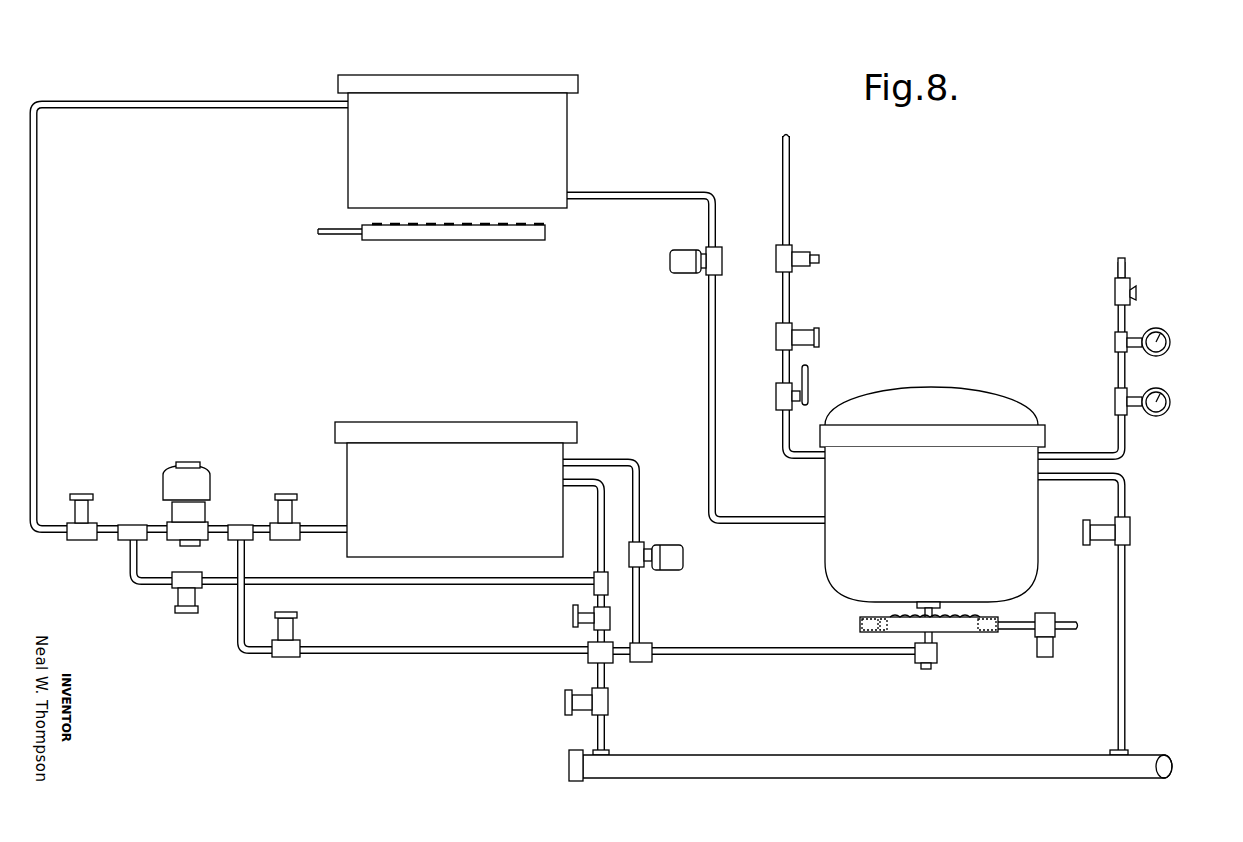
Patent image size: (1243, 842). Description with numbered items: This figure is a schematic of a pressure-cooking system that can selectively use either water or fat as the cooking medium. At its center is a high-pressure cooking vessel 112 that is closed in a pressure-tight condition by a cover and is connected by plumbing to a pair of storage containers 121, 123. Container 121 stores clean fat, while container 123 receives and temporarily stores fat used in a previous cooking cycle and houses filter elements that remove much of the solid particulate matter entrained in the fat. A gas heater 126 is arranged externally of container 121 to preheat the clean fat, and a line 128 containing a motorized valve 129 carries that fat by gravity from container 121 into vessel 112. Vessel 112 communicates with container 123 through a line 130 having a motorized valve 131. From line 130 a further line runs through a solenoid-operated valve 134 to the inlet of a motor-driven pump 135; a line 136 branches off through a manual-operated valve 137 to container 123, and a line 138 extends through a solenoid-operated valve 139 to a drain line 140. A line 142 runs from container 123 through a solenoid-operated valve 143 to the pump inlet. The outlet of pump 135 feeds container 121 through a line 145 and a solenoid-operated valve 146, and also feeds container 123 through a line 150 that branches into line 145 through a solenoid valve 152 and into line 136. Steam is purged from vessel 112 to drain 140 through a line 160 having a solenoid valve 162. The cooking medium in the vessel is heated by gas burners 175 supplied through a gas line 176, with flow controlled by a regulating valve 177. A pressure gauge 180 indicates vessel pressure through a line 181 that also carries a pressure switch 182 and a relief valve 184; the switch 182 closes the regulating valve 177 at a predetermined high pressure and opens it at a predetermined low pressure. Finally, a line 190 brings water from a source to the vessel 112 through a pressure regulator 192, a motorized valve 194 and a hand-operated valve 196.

The high-pressure cooking vessel 112 is at (910, 509).
The storage container 121 is at (560, 132).
The storage container 123 is at (485, 400).
The gas heater 126 is at (412, 236).
The line 128 is at (712, 296).
The motorized valve 129 is at (668, 259).
The line 130 is at (805, 655).
The motorized valve 131 is at (683, 560).
The solenoid-operated valve 134 is at (295, 660).
The motor-driven pump 135 is at (200, 525).
The line 136 is at (594, 600).
The valve 137 is at (594, 619).
The line 138 is at (598, 676).
The solenoid-operated valve 139 is at (608, 705).
The drain line 140 is at (900, 752).
The line 142 is at (324, 535).
The solenoid-operated valve 143 is at (293, 525).
The line 145 is at (37, 306).
The solenoid-operated valve 146 is at (92, 527).
The line 150 is at (130, 553).
The solenoid valve 152 is at (175, 587).
The line 160 is at (1125, 505).
The solenoid valve 162 is at (1130, 541).
The gas burners 175 is at (860, 625).
The line 176 is at (1088, 598).
The regulating valve 177 is at (1037, 635).
The pressure gauge 180 is at (1171, 399).
The line 181 is at (1125, 460).
The pressure switch 182 is at (1171, 350).
The relief valve 184 is at (1130, 296).
The line 190 is at (788, 178).
The pressure regulator 192 is at (784, 253).
The motorized valve 194 is at (785, 331).
The hand-operated valve 196 is at (778, 395).